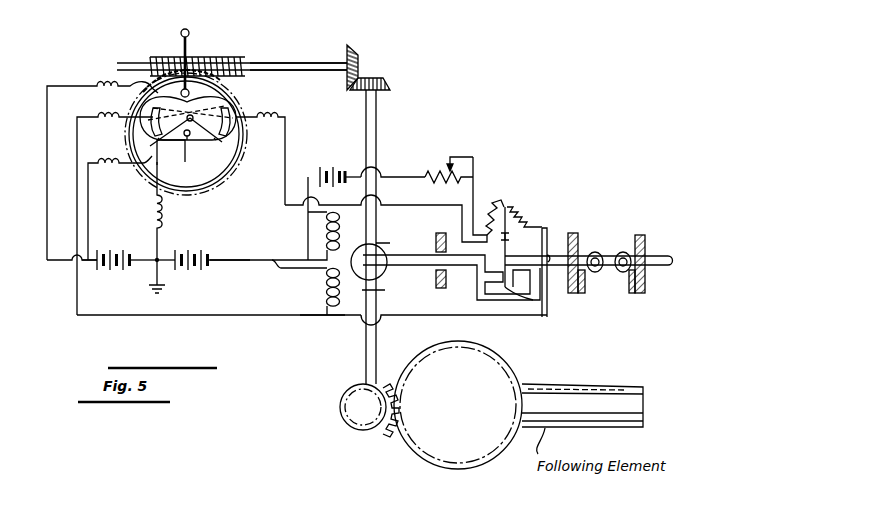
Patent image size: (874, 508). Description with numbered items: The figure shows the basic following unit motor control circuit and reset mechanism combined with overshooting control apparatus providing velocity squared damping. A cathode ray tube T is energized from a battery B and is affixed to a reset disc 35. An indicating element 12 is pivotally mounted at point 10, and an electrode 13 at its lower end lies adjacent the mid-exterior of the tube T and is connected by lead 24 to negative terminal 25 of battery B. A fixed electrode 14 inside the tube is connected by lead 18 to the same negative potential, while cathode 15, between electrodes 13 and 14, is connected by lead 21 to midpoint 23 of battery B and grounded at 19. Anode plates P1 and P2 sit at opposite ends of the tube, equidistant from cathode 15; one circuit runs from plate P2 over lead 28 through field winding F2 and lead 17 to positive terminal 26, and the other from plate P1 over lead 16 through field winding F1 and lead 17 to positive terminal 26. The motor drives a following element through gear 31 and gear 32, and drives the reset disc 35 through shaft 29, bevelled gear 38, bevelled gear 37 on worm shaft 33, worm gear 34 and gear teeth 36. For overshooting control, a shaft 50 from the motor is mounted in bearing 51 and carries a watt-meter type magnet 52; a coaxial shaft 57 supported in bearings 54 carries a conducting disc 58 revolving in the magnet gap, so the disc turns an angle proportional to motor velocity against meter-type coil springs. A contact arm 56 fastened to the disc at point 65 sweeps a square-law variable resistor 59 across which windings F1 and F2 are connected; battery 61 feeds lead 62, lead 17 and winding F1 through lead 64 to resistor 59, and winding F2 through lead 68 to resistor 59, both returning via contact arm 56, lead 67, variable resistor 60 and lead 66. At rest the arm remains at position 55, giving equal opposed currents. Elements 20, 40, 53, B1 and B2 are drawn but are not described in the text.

The pivot point 10 is at (191, 30).
The indicating element 12 is at (183, 42).
The electrode 13 is at (190, 93).
The fixed electrode 14 is at (189, 137).
The cathode 15 is at (193, 121).
The lead 16 is at (215, 317).
The lead 17 is at (273, 264).
The lead 18 is at (143, 167).
The ground 19 is at (166, 289).
The battery 20 is at (119, 270).
The lead 21 is at (163, 224).
The midpoint of battery 23 is at (164, 259).
The lead 24 is at (47, 227).
The negative terminal 25 is at (96, 259).
The positive terminal 26 is at (232, 259).
The lead 28 is at (288, 133).
The shaft 29 is at (366, 362).
The gear 31 is at (363, 429).
The gear 32 is at (449, 468).
The worm shaft 33 is at (289, 63).
The worm gear 34 is at (227, 61).
The reset disc 35 is at (246, 101).
The gear teeth 36 is at (156, 78).
The bevelled gear 37 is at (360, 66).
The bevelled gear 38 is at (387, 85).
The conductor 40 is at (330, 317).
The shaft 50 is at (414, 267).
The bearing 51 is at (442, 232).
The watt-meter type magnet 52 is at (508, 304).
The collars 53 is at (623, 251).
The bearings 54 is at (630, 294).
The rest position 55 is at (506, 202).
The contact arm 56 is at (521, 214).
The shaft 57 is at (517, 249).
The disc 58 is at (535, 303).
The variable resistor 59 is at (489, 200).
The variable resistor 60 is at (449, 157).
The battery 61 is at (339, 170).
The lead 62 is at (308, 232).
The lead 64 is at (401, 318).
The attachment point 65 is at (511, 238).
The lead 66 is at (389, 176).
The lead 67 is at (473, 199).
The lead 68 is at (392, 207).
The cathode ray tube T is at (243, 127).
The anode plate P1 is at (152, 112).
The anode plate P2 is at (236, 112).
The brush B1 is at (152, 143).
The brush B2 is at (220, 143).
The battery B is at (154, 258).
The field winding F1 is at (326, 291).
The field winding F2 is at (324, 236).